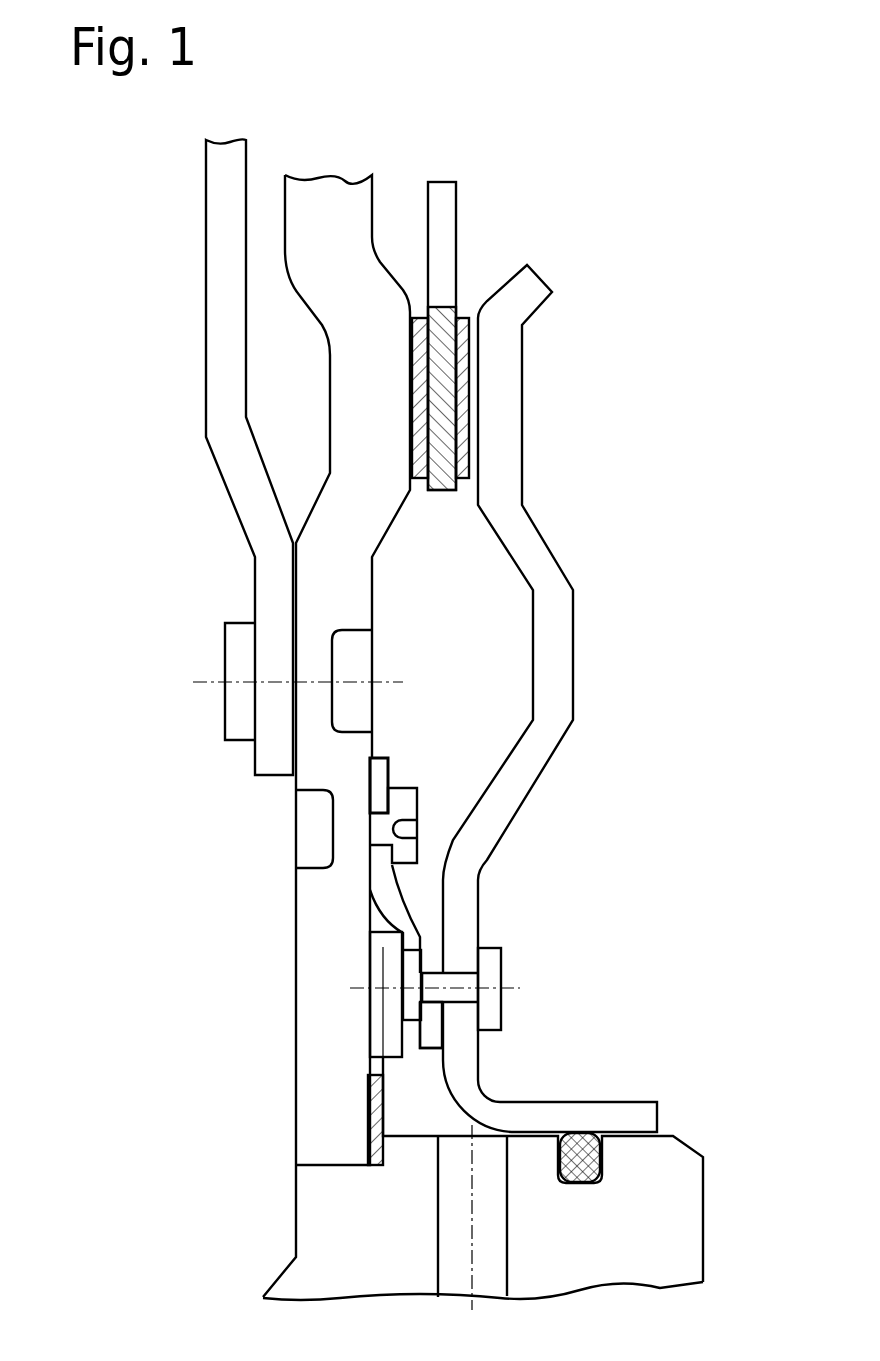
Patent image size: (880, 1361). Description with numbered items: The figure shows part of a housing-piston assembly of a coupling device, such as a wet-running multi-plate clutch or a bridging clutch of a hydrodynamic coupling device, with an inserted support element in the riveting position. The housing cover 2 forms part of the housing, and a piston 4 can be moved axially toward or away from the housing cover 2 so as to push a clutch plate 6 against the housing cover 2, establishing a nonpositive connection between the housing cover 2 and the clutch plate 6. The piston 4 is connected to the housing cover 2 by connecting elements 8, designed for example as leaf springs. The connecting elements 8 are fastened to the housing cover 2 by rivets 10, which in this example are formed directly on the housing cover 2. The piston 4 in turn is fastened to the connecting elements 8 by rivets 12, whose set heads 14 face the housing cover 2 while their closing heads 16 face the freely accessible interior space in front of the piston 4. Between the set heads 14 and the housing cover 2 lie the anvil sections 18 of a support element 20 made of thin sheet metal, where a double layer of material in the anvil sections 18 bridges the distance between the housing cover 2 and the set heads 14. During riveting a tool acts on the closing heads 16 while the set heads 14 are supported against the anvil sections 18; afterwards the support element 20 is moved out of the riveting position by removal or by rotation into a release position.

The housing cover 2 is at (315, 912).
The piston 4 is at (552, 643).
The clutch plate 6 is at (437, 387).
The connecting elements 8 is at (407, 905).
The rivets 10 is at (400, 807).
The rivets 12 is at (467, 980).
The set heads 14 is at (410, 1003).
The closing heads 16 is at (492, 1012).
The anvil sections 18 is at (373, 963).
The support element 20 is at (370, 1102).